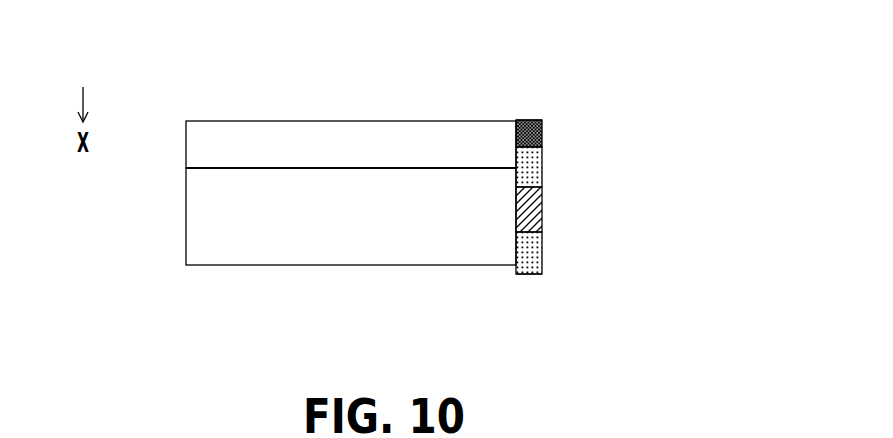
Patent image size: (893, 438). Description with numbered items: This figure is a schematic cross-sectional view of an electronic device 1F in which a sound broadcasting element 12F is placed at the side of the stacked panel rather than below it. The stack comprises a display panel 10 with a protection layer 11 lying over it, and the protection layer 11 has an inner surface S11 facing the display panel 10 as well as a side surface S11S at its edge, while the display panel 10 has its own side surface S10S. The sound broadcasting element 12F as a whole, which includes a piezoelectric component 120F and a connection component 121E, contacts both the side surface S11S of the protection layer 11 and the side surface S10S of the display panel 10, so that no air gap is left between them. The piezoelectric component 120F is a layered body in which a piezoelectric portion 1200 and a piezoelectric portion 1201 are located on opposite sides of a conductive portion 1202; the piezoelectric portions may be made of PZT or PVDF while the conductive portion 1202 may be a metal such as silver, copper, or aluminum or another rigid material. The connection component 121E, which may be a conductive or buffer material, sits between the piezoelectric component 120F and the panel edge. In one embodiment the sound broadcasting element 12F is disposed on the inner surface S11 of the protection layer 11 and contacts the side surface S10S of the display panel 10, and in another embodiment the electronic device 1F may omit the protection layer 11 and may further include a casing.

The display panel 10 is at (203, 224).
The protection layer 11 is at (198, 143).
The inner surface of the protection layer S11 is at (212, 169).
The side surface of the protection layer S11S is at (519, 127).
The side surface of the display panel S10S is at (518, 262).
The sound broadcasting element 12F is at (636, 194).
The piezoelectric component 120F is at (608, 210).
The piezoelectric portion 1200 is at (530, 168).
The conductive portion 1202 is at (532, 207).
The piezoelectric portion 1201 is at (528, 252).
The connection component 121E is at (543, 137).
The electronic device 1F is at (443, 193).